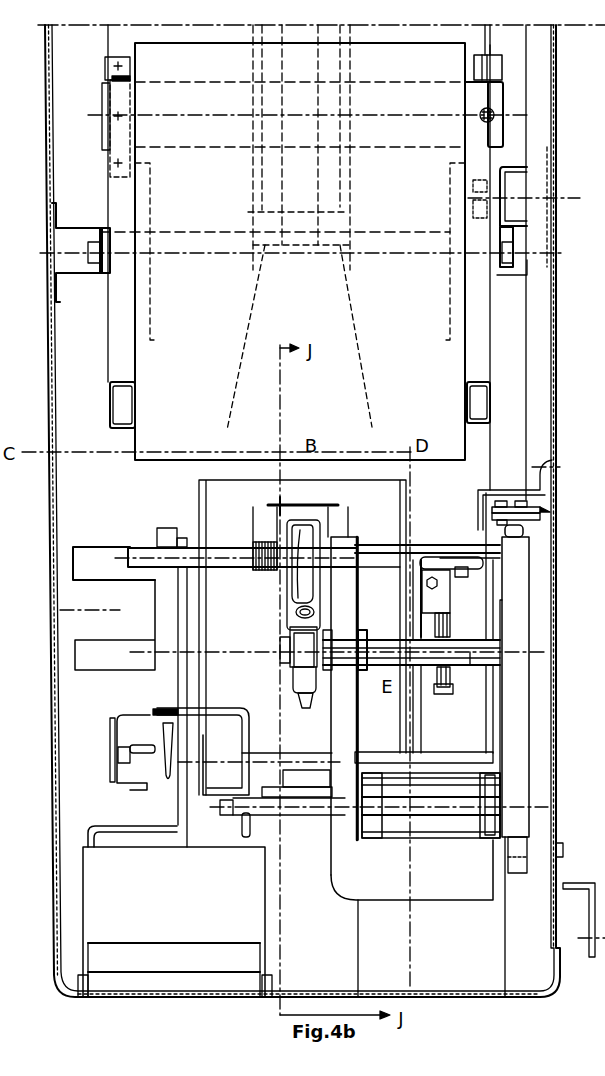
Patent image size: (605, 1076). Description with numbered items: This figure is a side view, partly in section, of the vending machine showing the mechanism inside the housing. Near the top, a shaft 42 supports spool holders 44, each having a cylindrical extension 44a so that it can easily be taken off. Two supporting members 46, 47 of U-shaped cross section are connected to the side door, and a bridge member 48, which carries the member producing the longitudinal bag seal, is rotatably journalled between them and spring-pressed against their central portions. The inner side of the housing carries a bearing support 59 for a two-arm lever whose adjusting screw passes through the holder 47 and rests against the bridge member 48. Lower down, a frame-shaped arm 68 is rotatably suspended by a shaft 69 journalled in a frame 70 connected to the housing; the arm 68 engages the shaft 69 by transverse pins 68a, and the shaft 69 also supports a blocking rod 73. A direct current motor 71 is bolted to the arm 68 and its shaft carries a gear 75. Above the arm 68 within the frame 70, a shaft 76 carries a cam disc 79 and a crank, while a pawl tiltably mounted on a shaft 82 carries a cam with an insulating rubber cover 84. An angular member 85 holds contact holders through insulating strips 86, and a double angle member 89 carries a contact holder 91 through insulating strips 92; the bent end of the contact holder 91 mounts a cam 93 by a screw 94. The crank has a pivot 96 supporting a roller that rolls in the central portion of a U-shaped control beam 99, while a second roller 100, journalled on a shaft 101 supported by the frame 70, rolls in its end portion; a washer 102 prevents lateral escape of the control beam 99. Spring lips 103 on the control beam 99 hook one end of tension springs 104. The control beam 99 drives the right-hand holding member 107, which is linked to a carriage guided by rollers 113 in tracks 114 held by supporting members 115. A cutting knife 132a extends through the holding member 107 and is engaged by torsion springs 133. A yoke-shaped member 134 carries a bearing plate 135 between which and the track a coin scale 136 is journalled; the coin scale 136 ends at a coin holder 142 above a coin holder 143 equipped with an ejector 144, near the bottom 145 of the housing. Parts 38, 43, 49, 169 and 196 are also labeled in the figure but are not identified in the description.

The guide lines 38 is at (246, 344).
The shaft 42 is at (135, 235).
The mounting bracket 43 is at (98, 276).
The spool holder 44 is at (117, 362).
The cylindrical extension 44a is at (158, 354).
The supporting member 46 is at (110, 57).
The supporting member 47 is at (492, 58).
The bridge member 48 is at (192, 90).
The pad 49 is at (130, 78).
The bearing support 59 is at (507, 167).
The frame-shaped arm 68 is at (418, 838).
The transverse pins 68a is at (485, 784).
The shaft 69 is at (303, 813).
The frame 70 is at (512, 688).
The direct current motor 71 is at (405, 895).
The blocking rod 73 is at (237, 708).
The gear 75 is at (522, 873).
The shaft 76 is at (376, 637).
The cam disc 79 is at (437, 695).
The shaft 82 is at (370, 545).
The insulating rubber cover 84 is at (522, 530).
The angular member 85 is at (548, 503).
The insulating strips 86 is at (545, 513).
The double angle member 89 is at (545, 447).
The contact holder 91 is at (446, 572).
The insulating strips 92 is at (462, 568).
The cam 93 is at (446, 600).
The screw 94 is at (432, 589).
The pivot 96 is at (341, 607).
The U-shaped control beam 99 is at (300, 590).
The roller 100 is at (306, 706).
The shaft 101 is at (470, 652).
The washer 102 is at (290, 634).
The spring lips 103 is at (297, 609).
The tension springs 104 is at (306, 553).
The right-hand holding member 107 is at (404, 497).
The rollers 113 is at (160, 534).
The tracks 114 is at (162, 671).
The supporting members 115 is at (82, 548).
The cutting knife 132a is at (307, 504).
The torsion springs 133 is at (262, 540).
The yoke-shaped member 134 is at (131, 710).
The bearing plate 135 is at (112, 737).
The coin scale 136 is at (140, 746).
The coin holder 142 is at (168, 746).
The coin holder 143 is at (256, 882).
The ejector 144 is at (100, 826).
The bottom 145 is at (511, 997).
The nub 169 is at (182, 538).
The shaft 196 is at (216, 548).